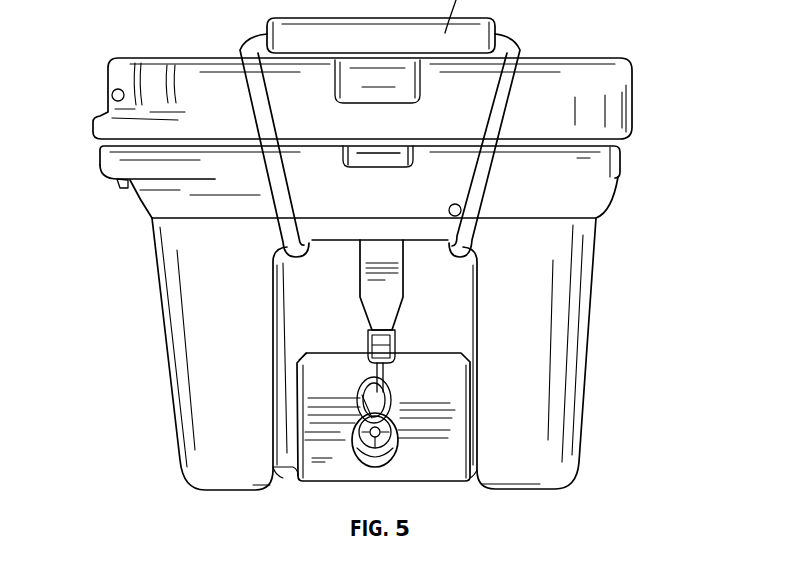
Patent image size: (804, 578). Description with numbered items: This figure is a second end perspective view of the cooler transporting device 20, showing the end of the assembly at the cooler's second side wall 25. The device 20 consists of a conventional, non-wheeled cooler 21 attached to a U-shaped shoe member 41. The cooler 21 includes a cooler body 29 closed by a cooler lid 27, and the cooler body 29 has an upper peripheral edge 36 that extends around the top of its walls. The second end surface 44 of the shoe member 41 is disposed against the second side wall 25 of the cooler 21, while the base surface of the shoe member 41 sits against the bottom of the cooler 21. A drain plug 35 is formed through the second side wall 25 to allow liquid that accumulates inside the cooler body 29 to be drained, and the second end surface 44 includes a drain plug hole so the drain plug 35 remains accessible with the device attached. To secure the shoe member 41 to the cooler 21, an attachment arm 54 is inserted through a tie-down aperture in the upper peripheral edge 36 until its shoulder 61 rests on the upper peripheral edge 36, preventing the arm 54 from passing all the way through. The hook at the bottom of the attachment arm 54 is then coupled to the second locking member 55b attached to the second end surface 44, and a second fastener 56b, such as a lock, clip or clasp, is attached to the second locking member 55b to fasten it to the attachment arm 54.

The cooler transporting device 20 is at (333, 490).
The cooler 21 is at (683, 200).
The second side wall 25 is at (227, 318).
The cooler lid 27 is at (603, 80).
The cooler body 29 is at (618, 292).
The drain plug 35 is at (393, 442).
The upper peripheral edge 36 is at (380, 143).
The shoe member 41 is at (313, 437).
The second end surface 44 is at (443, 380).
The attachment arm 54 is at (385, 293).
The second locking member 55b is at (312, 359).
The second fastener 56b is at (390, 398).
The shoulder 61 is at (212, 172).